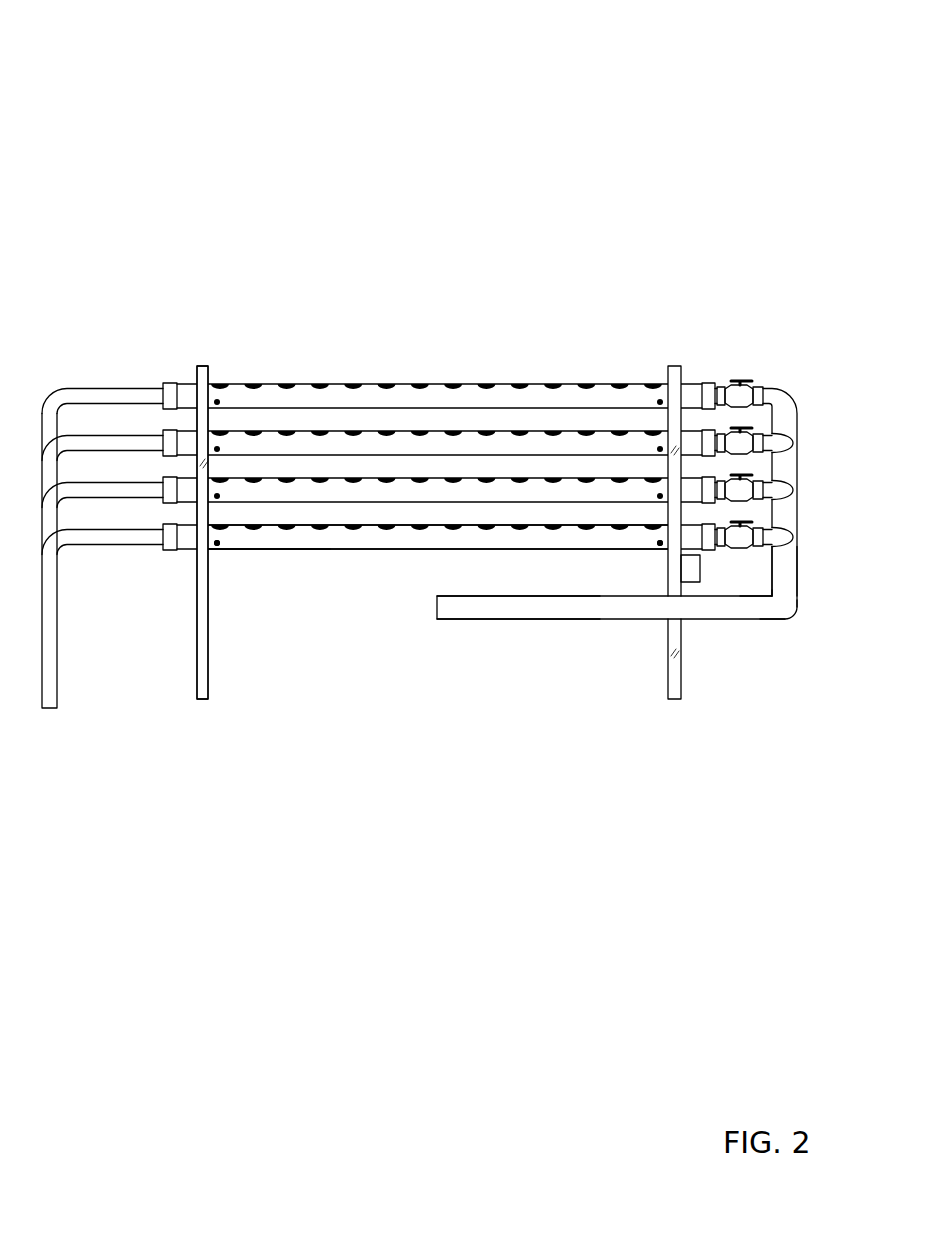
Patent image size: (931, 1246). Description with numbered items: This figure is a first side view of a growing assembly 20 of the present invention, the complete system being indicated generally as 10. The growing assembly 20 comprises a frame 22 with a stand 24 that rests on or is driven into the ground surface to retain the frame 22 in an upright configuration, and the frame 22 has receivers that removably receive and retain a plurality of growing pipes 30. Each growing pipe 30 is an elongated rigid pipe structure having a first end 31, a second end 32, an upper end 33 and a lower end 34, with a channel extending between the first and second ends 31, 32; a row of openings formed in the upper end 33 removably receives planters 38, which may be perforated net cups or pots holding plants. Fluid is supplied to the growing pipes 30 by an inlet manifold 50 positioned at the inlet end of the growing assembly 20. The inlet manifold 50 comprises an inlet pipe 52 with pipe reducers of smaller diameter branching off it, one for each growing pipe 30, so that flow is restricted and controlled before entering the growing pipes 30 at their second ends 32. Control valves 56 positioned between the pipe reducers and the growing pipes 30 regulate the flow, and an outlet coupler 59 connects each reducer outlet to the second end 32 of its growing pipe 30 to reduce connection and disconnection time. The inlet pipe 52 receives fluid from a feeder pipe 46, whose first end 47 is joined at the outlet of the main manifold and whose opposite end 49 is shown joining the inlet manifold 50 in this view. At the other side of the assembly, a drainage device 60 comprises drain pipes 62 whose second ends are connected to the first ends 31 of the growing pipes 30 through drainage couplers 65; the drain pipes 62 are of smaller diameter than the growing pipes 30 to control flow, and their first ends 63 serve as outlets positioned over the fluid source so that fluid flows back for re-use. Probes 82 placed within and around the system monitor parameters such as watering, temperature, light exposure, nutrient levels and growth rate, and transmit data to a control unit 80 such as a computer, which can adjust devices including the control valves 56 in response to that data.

The heat exchanger assembly 10 is at (146, 111).
The growing assembly 20 is at (443, 365).
The frame 22 is at (210, 380).
The stand 24 is at (208, 672).
The growing pipe 30 is at (338, 549).
The first end 31 is at (180, 550).
The second end 32 is at (658, 545).
The upper end 33 is at (340, 527).
The lower end 34 is at (302, 549).
The planter 38 is at (378, 370).
The feeder pipe 46 is at (480, 622).
The first end 47 is at (436, 605).
The elbow 49 is at (800, 605).
The inlet manifold 50 is at (811, 390).
The inlet pipe 52 is at (797, 557).
The control valve 56 is at (736, 381).
The outlet coupler 59 is at (698, 383).
The drainage device 60 is at (94, 536).
The drain pipe 62 is at (96, 466).
The first end 63 is at (50, 708).
The drainage coupler 65 is at (181, 462).
The control unit 80 is at (692, 582).
The probe 82 is at (217, 545).